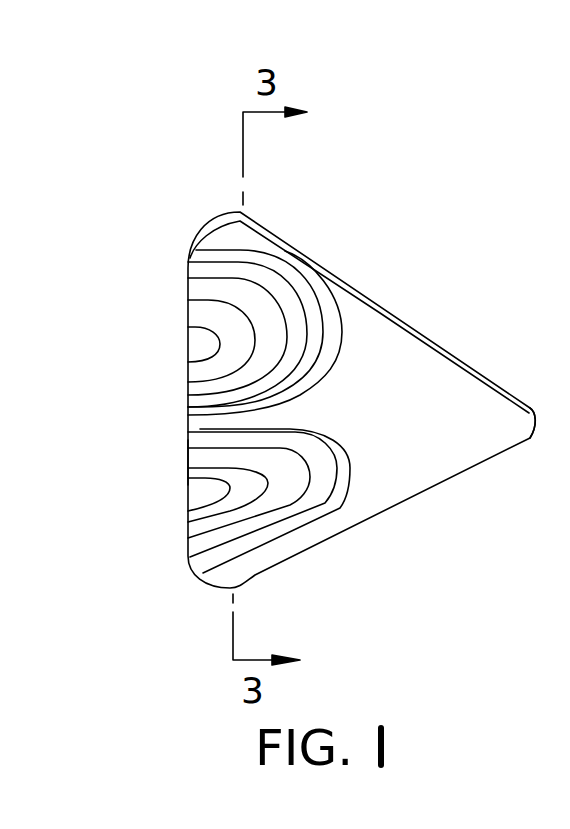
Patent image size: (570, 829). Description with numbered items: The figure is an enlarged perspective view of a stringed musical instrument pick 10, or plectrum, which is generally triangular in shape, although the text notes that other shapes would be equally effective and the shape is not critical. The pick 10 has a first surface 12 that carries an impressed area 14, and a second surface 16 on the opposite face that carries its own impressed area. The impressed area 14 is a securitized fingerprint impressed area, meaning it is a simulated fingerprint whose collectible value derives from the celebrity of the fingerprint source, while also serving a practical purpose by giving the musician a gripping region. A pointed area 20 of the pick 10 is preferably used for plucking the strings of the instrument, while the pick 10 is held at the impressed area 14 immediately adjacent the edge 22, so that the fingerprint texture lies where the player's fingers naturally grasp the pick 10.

The stringed musical instrument pick 10 is at (398, 178).
The first surface 12 is at (345, 507).
The impressed area 14 is at (320, 442).
The second surface 16 is at (205, 232).
The pointed area 20 is at (525, 428).
The edge 22 is at (188, 462).